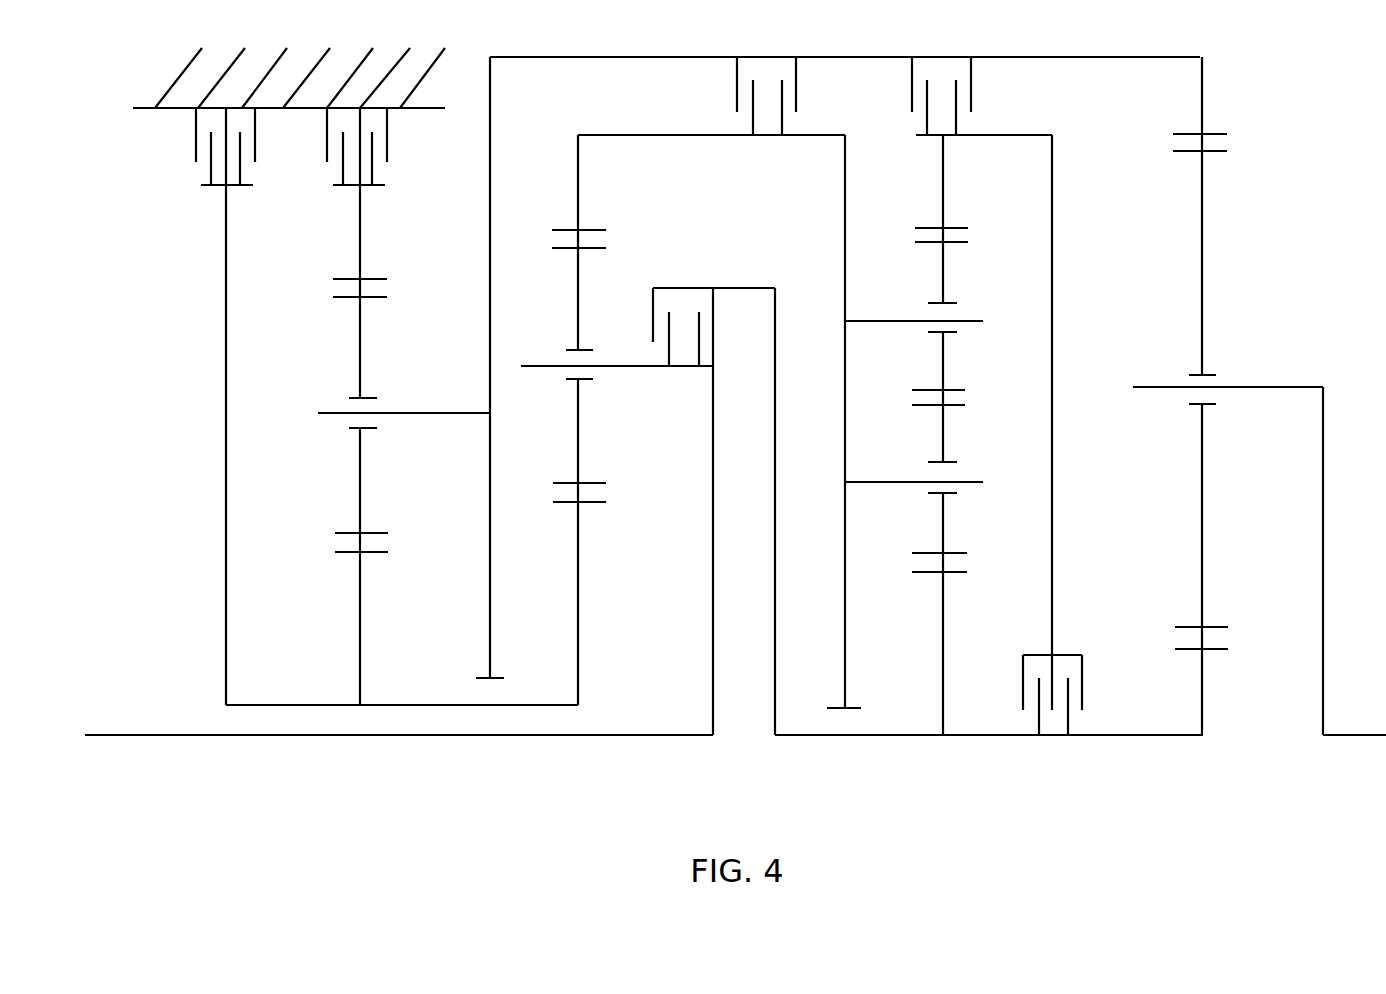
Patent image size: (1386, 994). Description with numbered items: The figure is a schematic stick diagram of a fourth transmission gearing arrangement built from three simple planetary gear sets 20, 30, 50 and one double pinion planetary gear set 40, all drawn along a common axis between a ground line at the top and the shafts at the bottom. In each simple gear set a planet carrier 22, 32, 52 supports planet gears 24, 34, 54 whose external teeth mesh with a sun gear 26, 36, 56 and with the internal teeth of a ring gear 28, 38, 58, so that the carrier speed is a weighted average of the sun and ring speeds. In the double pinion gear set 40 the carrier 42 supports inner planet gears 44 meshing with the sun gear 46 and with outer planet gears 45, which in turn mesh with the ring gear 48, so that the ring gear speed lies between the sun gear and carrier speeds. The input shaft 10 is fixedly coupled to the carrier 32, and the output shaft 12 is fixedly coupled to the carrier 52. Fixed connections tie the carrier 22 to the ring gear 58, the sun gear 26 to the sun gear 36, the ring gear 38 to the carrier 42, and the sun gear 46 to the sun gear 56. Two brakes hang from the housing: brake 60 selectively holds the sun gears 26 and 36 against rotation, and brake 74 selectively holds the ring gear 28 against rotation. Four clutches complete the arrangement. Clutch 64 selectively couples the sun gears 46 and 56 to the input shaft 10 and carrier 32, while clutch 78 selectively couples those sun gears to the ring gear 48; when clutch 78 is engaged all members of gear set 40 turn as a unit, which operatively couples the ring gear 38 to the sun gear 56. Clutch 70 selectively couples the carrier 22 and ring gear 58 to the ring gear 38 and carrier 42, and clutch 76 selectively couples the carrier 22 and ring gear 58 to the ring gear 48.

The input shaft 10 is at (217, 735).
The output shaft 12 is at (1385, 735).
The planetary gear set 20 is at (402, 425).
The planet carrier 22 is at (490, 390).
The planet gears 24 is at (365, 355).
The sun gear 26 is at (360, 592).
The ring gear 28 is at (362, 242).
The planetary gear set 30 is at (616, 465).
The planet carrier 32 is at (713, 437).
The planet gears 34 is at (583, 312).
The sun gear 36 is at (577, 542).
The ring gear 38 is at (578, 193).
The double pinion planetary gear set 40 is at (989, 463).
The planet carrier 42 is at (845, 427).
The inner planet gears 44 is at (943, 448).
The outer planet gears 45 is at (943, 280).
The sun gear 46 is at (943, 640).
The ring gear 48 is at (943, 183).
The planetary gear set 50 is at (1228, 425).
The planet carrier 52 is at (1298, 387).
The planet gears 54 is at (1202, 320).
The sun gear 56 is at (1202, 695).
The ring gear 58 is at (1200, 105).
The brake 60 is at (196, 132).
The clutch 64 is at (713, 307).
The clutch 70 is at (737, 87).
The brake 74 is at (327, 132).
The clutch 76 is at (971, 105).
The clutch 78 is at (1082, 688).